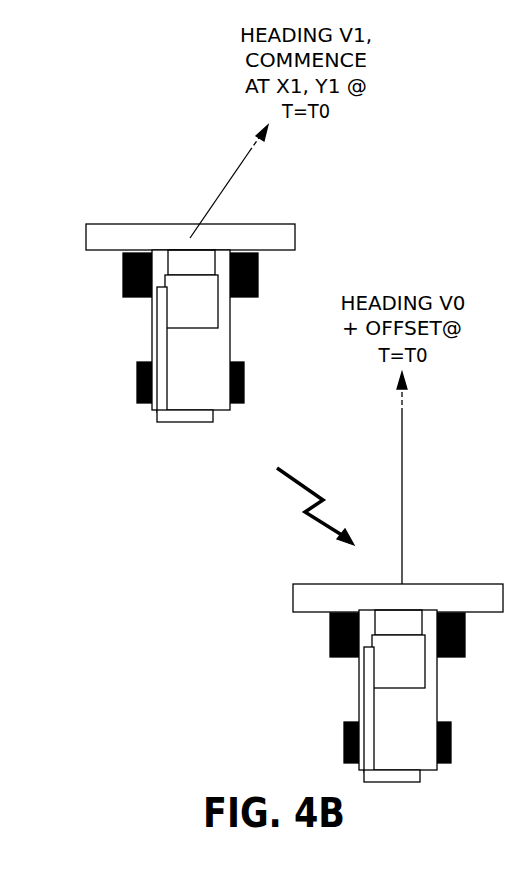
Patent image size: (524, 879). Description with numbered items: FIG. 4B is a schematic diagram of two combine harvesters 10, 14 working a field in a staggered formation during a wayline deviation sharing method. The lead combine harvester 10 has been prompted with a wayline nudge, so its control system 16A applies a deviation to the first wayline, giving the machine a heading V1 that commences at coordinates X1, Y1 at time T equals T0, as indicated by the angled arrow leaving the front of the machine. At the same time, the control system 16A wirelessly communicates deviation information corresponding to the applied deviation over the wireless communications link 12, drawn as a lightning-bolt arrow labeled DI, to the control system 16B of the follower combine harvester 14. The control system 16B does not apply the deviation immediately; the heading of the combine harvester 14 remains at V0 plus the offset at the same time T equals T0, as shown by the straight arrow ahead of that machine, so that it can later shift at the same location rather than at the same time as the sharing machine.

The combine harvester 10 is at (208, 380).
The wireless communications link 12 is at (298, 480).
The combine harvester 14 is at (397, 731).
The control system 16A is at (203, 263).
The control system 16B is at (393, 623).